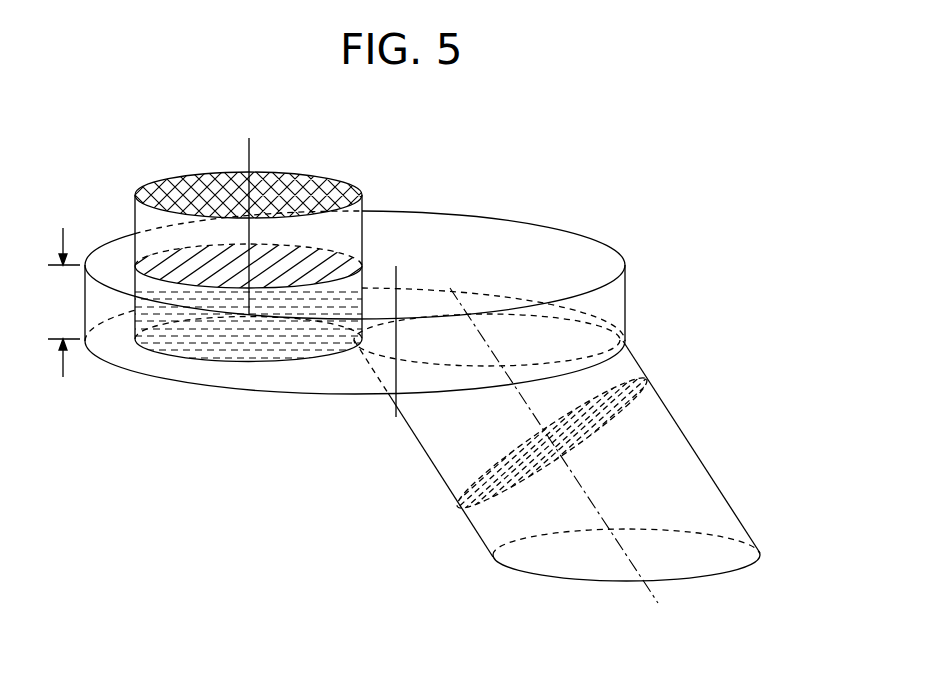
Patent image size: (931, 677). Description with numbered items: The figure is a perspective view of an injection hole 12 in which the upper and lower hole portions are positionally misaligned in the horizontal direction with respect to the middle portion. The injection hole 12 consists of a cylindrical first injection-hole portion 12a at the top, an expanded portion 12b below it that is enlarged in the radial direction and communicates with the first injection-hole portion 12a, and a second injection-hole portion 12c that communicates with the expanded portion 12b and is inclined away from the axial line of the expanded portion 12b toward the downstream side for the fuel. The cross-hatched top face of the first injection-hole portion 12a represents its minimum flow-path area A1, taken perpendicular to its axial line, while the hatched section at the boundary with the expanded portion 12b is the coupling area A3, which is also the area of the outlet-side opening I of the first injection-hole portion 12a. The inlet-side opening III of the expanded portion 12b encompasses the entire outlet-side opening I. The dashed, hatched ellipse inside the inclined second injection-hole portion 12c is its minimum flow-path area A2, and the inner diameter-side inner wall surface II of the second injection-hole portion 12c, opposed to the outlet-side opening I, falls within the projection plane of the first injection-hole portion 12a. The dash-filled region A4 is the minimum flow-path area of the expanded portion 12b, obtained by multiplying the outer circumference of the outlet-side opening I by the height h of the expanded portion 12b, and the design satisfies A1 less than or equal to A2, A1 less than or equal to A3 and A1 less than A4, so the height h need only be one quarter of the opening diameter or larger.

The injection hole 12 is at (162, 103).
The first injection-hole portion 12a is at (347, 237).
The expanded portion 12b is at (612, 306).
The second injection-hole portion 12c is at (690, 484).
The minimum flow-path area of the first injection-hole portion A1 is at (345, 182).
The minimum flow-path area of the second injection-hole portion A2 is at (628, 398).
The area of the coupling portion A3 is at (355, 268).
The minimum flow-path area of the expanded portion A4 is at (198, 342).
The outlet-side opening I is at (138, 285).
The inner diameter-side inner wall surface II is at (438, 450).
The inlet-side opening III is at (546, 243).
The height of the expanded portion h is at (64, 302).